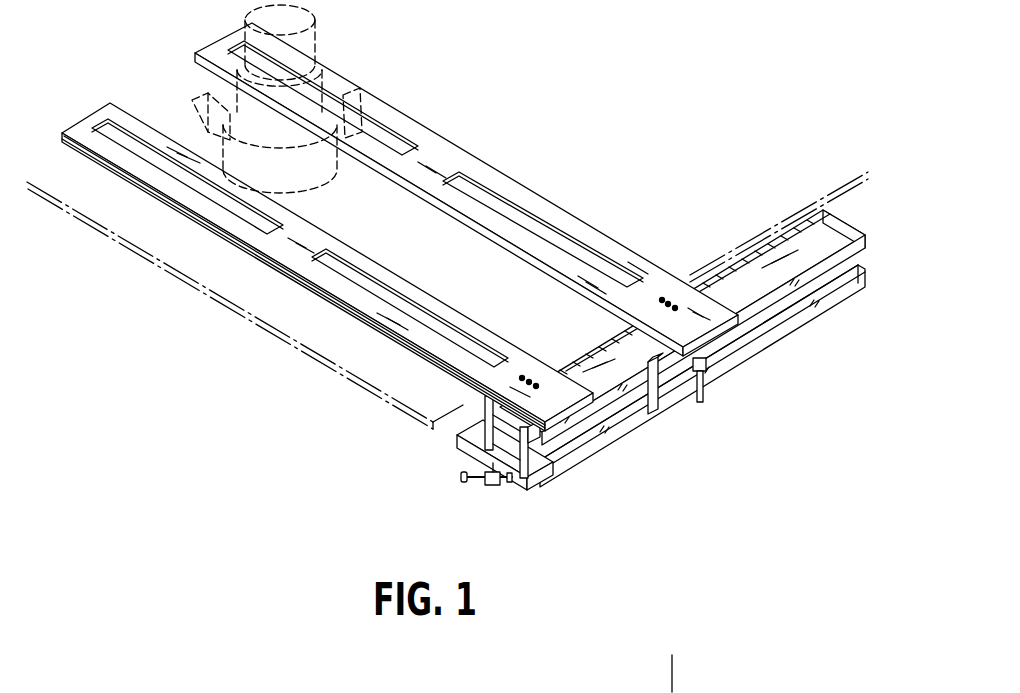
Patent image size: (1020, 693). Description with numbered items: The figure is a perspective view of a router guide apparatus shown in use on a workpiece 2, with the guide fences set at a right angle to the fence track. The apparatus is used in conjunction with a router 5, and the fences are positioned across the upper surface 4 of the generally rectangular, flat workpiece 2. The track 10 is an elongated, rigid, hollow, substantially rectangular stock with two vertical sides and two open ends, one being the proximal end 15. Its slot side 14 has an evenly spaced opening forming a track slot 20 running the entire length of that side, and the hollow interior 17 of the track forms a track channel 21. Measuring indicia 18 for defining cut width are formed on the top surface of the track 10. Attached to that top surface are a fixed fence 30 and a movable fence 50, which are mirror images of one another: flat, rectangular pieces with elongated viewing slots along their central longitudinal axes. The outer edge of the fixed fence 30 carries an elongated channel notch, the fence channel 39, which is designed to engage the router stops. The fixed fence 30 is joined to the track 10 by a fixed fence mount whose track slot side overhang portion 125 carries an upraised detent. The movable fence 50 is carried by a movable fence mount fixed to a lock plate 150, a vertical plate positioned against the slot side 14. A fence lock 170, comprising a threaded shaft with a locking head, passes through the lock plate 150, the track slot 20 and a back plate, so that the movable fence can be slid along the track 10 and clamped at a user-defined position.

The workpiece 2 is at (647, 137).
The upper surface 4 is at (464, 37).
The router 5 is at (318, 16).
The track 10 is at (838, 225).
The slot side 14 is at (838, 293).
The proximal end 15 is at (485, 448).
The hollow interior 17 is at (517, 452).
The measuring indicia 18 is at (790, 234).
The track slot 20 is at (757, 318).
The track channel 21 is at (492, 464).
The fixed fence 30 is at (128, 120).
The fence channel 39 is at (303, 280).
The movable fence 50 is at (434, 132).
The track slot side overhang portion 125 is at (531, 436).
The lock plate 150 is at (661, 395).
The fence lock 170 is at (710, 364).